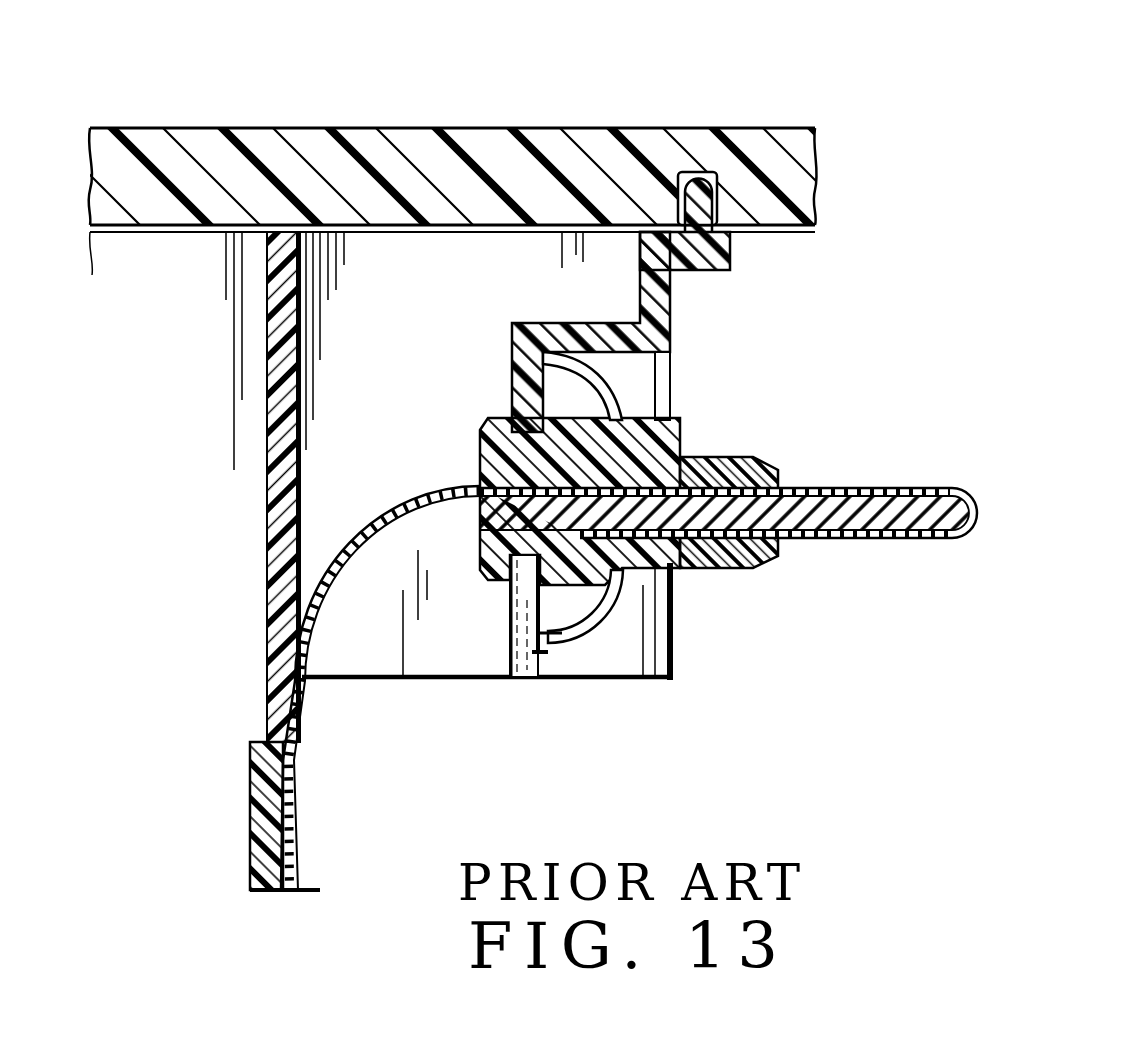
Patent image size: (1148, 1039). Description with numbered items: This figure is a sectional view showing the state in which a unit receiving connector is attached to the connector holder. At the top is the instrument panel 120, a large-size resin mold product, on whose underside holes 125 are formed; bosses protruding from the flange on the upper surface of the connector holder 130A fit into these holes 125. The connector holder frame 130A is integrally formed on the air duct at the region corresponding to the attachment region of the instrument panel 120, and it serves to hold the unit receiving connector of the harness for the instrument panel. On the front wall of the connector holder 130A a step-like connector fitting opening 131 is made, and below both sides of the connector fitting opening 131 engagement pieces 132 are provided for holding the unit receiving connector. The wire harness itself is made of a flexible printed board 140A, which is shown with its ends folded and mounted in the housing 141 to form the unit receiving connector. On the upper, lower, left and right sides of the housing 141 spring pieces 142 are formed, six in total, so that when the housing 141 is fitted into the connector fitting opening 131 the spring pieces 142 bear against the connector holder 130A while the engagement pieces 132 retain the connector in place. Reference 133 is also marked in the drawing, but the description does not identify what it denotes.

The instrument panel 120 is at (468, 140).
The holes 125 is at (700, 178).
The engaging tab 133 is at (714, 206).
The connector holder frame 130A is at (672, 328).
The spring pieces 142 is at (608, 382).
The housing 141 is at (733, 568).
The connector fitting opening 131 is at (635, 627).
The engagement pieces 132 is at (540, 657).
The flexible printed board 140A is at (300, 770).